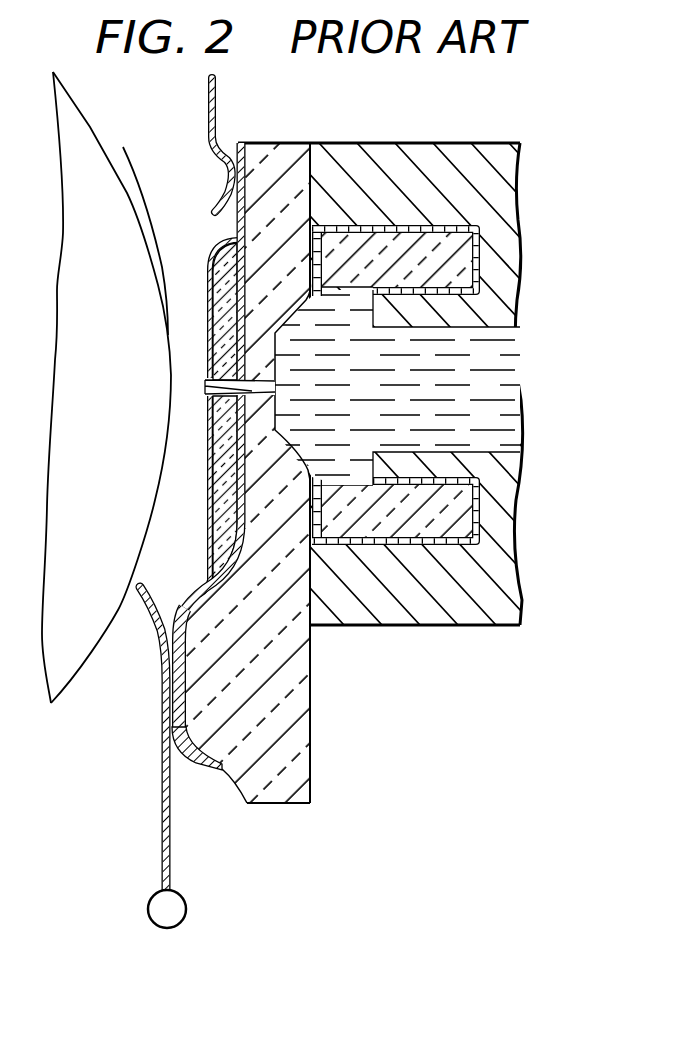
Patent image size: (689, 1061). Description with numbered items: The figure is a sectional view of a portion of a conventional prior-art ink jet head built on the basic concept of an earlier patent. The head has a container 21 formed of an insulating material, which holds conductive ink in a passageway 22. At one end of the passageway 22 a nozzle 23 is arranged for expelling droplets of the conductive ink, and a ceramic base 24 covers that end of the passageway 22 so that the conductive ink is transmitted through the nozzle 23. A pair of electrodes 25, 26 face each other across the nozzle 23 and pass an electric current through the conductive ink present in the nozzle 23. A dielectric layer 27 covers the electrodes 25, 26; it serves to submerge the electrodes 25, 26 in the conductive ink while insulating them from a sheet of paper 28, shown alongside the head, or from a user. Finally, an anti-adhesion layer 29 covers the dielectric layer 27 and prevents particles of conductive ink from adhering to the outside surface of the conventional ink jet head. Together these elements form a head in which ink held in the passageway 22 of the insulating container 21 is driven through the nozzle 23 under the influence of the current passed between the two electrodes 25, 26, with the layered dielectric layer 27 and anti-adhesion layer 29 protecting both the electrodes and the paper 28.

The container 21 is at (513, 188).
The passageway 22 is at (511, 379).
The nozzle 23 is at (212, 388).
The ceramic base 24 is at (275, 148).
The electrode 25 is at (236, 543).
The electrode 26 is at (235, 226).
The dielectric layer 27 is at (223, 313).
The sheet of paper 28 is at (138, 182).
The anti-adhesion layer 29 is at (208, 276).